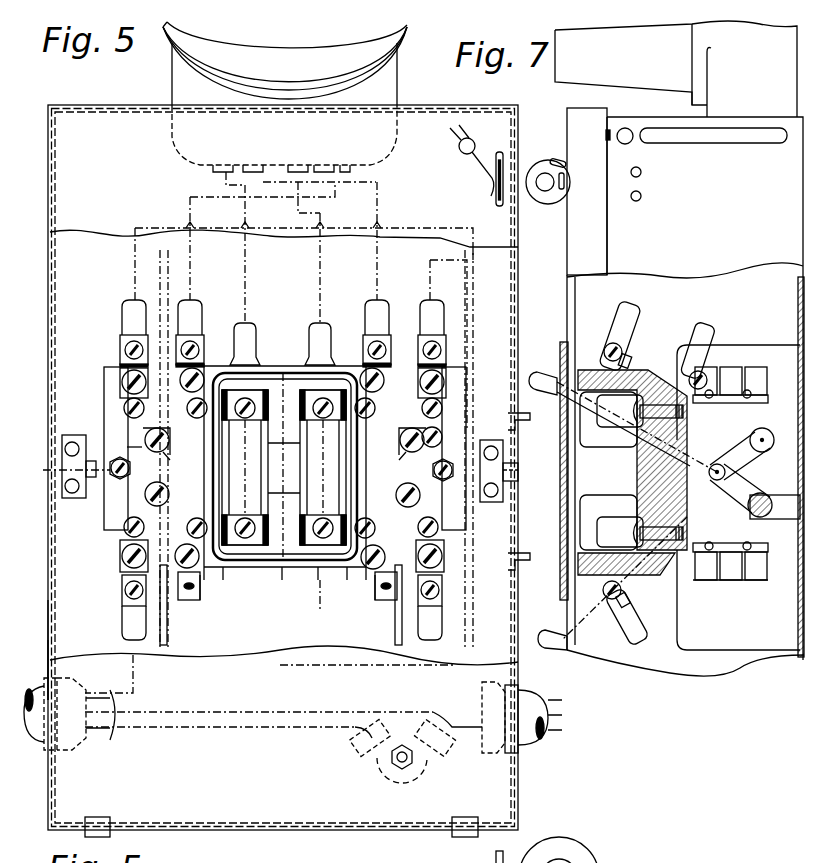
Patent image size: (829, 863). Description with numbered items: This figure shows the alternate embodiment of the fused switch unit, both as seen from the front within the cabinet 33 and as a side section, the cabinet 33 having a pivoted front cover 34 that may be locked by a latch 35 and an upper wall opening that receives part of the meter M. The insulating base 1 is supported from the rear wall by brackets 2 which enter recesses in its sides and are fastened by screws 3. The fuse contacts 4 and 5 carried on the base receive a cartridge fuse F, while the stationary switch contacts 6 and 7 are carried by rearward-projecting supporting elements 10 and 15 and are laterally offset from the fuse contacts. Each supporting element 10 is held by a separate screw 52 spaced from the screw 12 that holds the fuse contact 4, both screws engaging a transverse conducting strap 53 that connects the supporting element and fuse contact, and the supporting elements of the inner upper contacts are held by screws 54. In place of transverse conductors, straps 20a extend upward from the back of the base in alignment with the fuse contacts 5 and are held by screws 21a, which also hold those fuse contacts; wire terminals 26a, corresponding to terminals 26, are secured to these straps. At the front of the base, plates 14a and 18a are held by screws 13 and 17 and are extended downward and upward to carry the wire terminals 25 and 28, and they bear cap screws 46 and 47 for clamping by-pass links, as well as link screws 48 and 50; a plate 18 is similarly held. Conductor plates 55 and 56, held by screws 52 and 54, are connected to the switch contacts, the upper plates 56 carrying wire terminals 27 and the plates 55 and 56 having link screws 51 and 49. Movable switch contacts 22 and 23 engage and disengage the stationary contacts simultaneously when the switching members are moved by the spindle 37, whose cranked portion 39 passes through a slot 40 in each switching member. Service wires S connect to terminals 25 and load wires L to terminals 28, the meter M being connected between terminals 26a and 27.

In FIG. 5, the insulating base 1 is at (282, 566).
In FIG. 5, the brackets 2 is at (88, 437).
In FIG. 5, the screws 3 is at (111, 474).
In FIG. 7, the fuse contact 4 is at (605, 516).
In FIG. 7, the fuse contact 5 is at (603, 410).
In FIG. 5, the stationary switch contact 6 is at (43, 470).
In FIG. 5, the stationary switch contact 7 is at (312, 303).
In FIG. 7, the supporting element 10 is at (726, 548).
In FIG. 5, the screw 12 is at (248, 518).
In FIG. 7, the screw 12 is at (632, 532).
In FIG. 5, the screw 13 is at (122, 556).
In FIG. 5, the plate 14a is at (436, 500).
In FIG. 7, the supporting elements 15 is at (758, 393).
In FIG. 5, the screw 17 is at (122, 408).
In FIG. 5, the plate 18 is at (440, 435).
In FIG. 5, the plate 18a is at (123, 443).
In FIG. 7, the strap 20a is at (708, 369).
In FIG. 5, the screw 21a is at (325, 420).
In FIG. 7, the screw 21a is at (687, 420).
In FIG. 7, the movable switch contact 22 is at (742, 584).
In FIG. 7, the movable switch contact 23 is at (752, 405).
In FIG. 5, the wire connecting terminal 25 is at (130, 620).
In FIG. 7, the wire connecting terminal 25 is at (638, 632).
In FIG. 5, the wire connecting terminal 26 is at (128, 308).
In FIG. 5, the wire terminal 26a is at (313, 331).
In FIG. 7, the wire terminal 26a is at (711, 333).
In FIG. 5, the wire terminal 27 is at (190, 318).
In FIG. 7, the wire terminal 27 is at (636, 312).
In FIG. 5, the wire connecting terminal 28 is at (433, 309).
In FIG. 5, the cabinet 33 is at (50, 632).
In FIG. 7, the cabinet 33 is at (744, 228).
In FIG. 5, the front cover 34 is at (50, 660).
In FIG. 7, the front cover 34 is at (603, 255).
In FIG. 5, the latch 35 is at (496, 200).
In FIG. 7, the latch 35 is at (555, 158).
In FIG. 5, the spindle 37 is at (520, 474).
In FIG. 7, the cranked portion 39 is at (760, 517).
In FIG. 7, the slot 40 is at (783, 497).
In FIG. 5, the cap screws 46 is at (145, 495).
In FIG. 5, the cap screws 47 is at (165, 452).
In FIG. 5, the screws 48 is at (122, 579).
In FIG. 5, the screws 49 is at (193, 366).
In FIG. 5, the screws 50 is at (118, 381).
In FIG. 5, the screws 51 is at (193, 600).
In FIG. 5, the screw 52 is at (196, 518).
In FIG. 5, the transverse conducting strap 53 is at (200, 575).
In FIG. 7, the transverse conducting strap 53 is at (664, 560).
In FIG. 5, the screws 54 is at (399, 440).
In FIG. 5, the conductor plates 55 is at (202, 590).
In FIG. 5, the conductor plates 56 is at (200, 368).
In FIG. 7, the conductor plates 56 is at (627, 356).
In FIG. 5, the meter M is at (288, 57).
In FIG. 7, the meter M is at (660, 56).
In FIG. 5, the fuse F is at (284, 467).
In FIG. 5, the service wires S is at (135, 724).
In FIG. 5, the load wires L is at (467, 723).